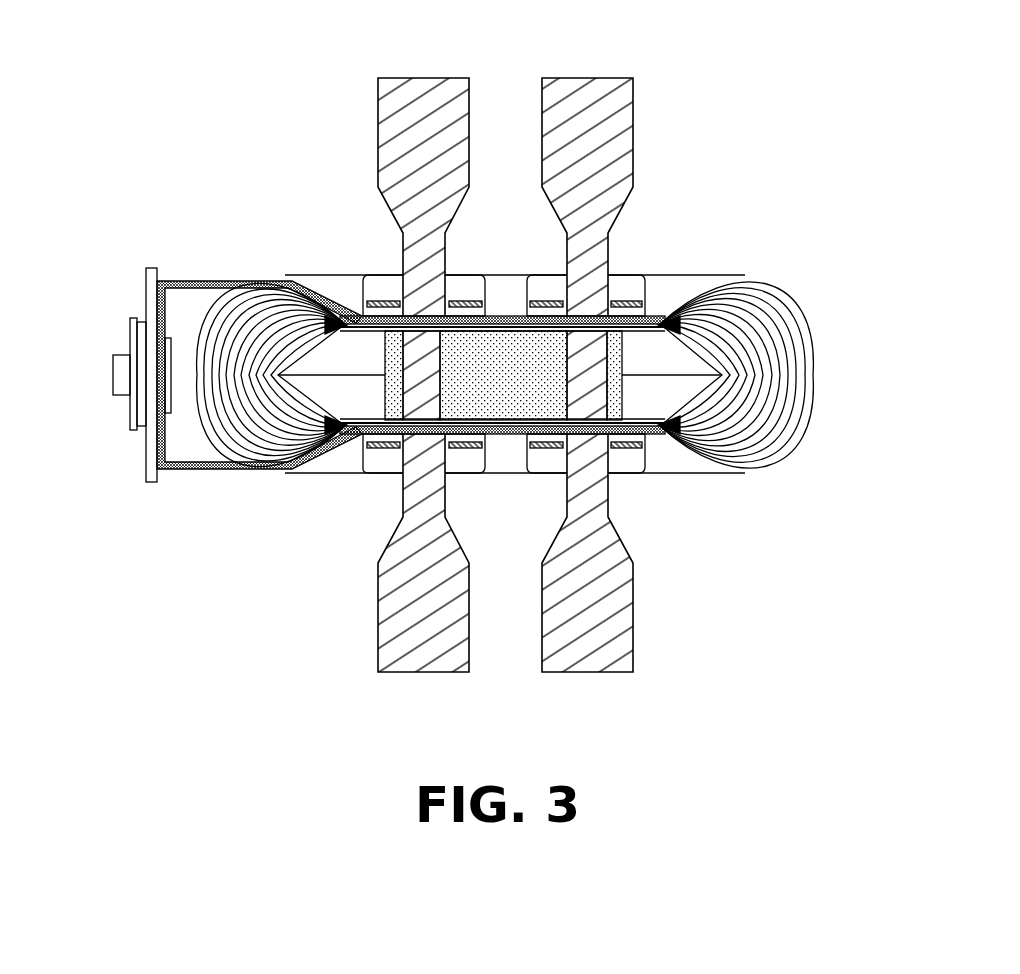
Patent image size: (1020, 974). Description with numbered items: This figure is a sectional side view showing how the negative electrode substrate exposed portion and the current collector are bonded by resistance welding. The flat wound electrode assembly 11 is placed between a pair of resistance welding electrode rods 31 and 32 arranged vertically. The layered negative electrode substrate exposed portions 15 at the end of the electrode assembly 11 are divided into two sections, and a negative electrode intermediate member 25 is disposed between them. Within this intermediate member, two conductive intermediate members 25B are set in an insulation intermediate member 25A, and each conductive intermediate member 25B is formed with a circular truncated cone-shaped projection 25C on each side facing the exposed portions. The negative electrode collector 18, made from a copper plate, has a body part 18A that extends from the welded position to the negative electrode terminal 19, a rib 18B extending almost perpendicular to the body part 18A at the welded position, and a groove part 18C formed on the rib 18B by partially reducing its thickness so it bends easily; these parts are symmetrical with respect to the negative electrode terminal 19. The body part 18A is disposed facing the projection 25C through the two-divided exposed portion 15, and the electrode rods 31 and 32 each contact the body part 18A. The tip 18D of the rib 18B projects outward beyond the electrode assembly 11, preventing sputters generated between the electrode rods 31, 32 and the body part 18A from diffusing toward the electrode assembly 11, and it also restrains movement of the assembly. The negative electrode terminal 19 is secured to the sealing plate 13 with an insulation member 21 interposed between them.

The flat wound electrode assembly 11 is at (317, 473).
The sealing plate 13 is at (147, 473).
The negative electrode substrate exposed portion 15 is at (757, 310).
The negative electrode collector 18 is at (206, 282).
The body part 18A is at (505, 438).
The rib 18B is at (638, 450).
The groove part 18C is at (547, 443).
The tip of the rib 18D is at (388, 475).
The negative electrode terminal 19 is at (122, 400).
The insulation member 21 is at (132, 327).
The negative electrode intermediate member 25 is at (519, 331).
The insulation intermediate member 25A is at (522, 341).
The conductive intermediate member 25B is at (408, 357).
The circular truncated cone-shaped projection 25C is at (613, 318).
The resistance welding electrode rod 31 is at (393, 100).
The resistance welding electrode rod 32 is at (382, 655).